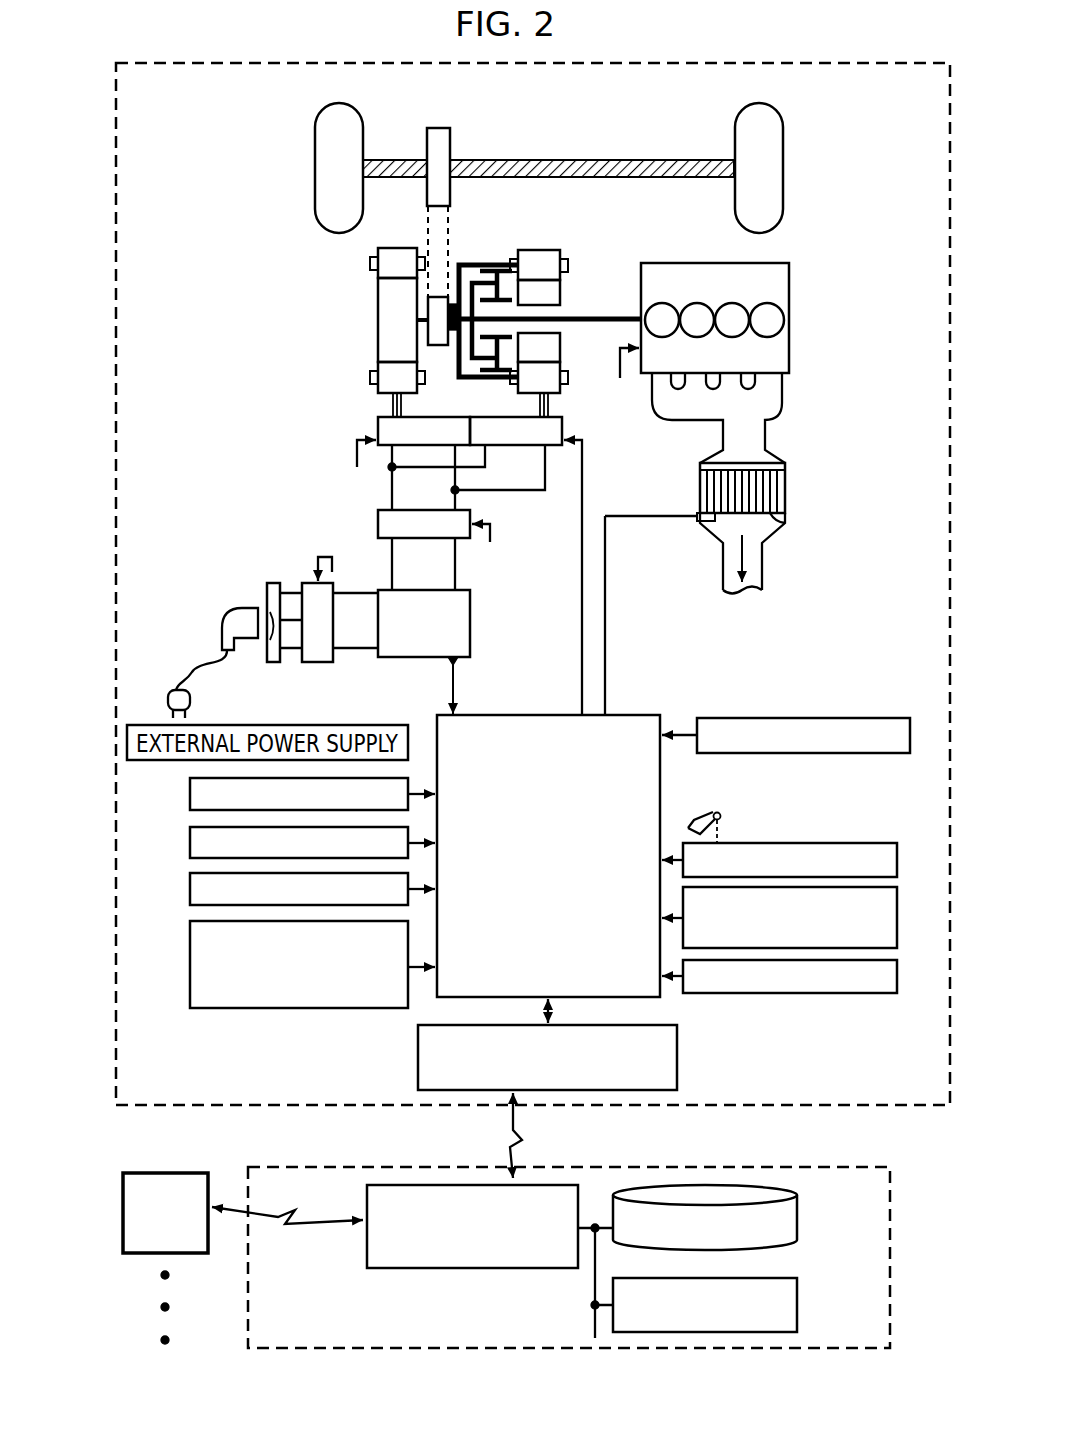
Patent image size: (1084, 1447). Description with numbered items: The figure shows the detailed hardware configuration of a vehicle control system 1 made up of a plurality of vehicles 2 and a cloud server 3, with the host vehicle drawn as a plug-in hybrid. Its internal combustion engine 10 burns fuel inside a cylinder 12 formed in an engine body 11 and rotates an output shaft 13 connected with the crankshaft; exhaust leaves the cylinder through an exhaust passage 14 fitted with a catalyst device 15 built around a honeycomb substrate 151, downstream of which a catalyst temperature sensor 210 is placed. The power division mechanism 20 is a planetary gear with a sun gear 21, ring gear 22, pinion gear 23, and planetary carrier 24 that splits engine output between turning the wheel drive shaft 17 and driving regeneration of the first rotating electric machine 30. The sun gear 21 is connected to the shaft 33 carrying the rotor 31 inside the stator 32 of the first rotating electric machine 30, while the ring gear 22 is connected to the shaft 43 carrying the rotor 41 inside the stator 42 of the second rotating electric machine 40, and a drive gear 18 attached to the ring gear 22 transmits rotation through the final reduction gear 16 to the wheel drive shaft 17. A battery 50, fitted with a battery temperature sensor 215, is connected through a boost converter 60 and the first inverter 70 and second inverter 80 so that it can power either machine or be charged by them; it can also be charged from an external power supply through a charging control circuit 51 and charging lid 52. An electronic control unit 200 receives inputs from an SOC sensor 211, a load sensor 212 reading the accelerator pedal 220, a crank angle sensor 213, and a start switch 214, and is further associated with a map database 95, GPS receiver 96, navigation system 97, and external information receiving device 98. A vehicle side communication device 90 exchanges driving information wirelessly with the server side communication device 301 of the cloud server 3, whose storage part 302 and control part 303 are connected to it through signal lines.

The vehicle control system 1 is at (106, 198).
The vehicles 2 is at (148, 1107).
The cloud server 3 is at (605, 1257).
The internal combustion engine 10 is at (740, 310).
The engine body 11 is at (780, 292).
The cylinder 12 is at (790, 326).
The output shaft 13 is at (620, 316).
The exhaust passage 14 is at (765, 432).
The catalyst device 15 is at (770, 517).
The substrate 151 is at (788, 525).
The final reduction gear 16 is at (440, 128).
The wheel drive shaft 17 is at (380, 158).
The drive gear 18 is at (438, 348).
The power division mechanism 20 is at (547, 275).
The sun gear 21 is at (544, 254).
The ring gear 22 is at (462, 262).
The pinion gear 23 is at (500, 296).
The planetary carrier 24 is at (482, 270).
The first rotating electric machine 30 is at (593, 296).
The rotor 31 is at (556, 288).
The stator 32 is at (556, 256).
The shaft 33 is at (552, 300).
The second rotating electric machine 40 is at (341, 320).
The rotor 41 is at (377, 331).
The stator 42 is at (368, 373).
The shaft 43 is at (377, 306).
The battery 50 is at (472, 638).
The charging control circuit 51 is at (322, 664).
The charging lid 52 is at (274, 664).
The boost converter 60 is at (377, 525).
The first inverter 70 is at (563, 427).
The second inverter 80 is at (377, 425).
The vehicle side communication device 90 is at (679, 1048).
The map database 95 is at (189, 794).
The GPS receiver 96 is at (189, 843).
The navigation system 97 is at (189, 889).
The external information receiving device 98 is at (189, 962).
The electronic control unit 200 is at (630, 714).
The catalyst temperature sensor 210 is at (712, 524).
The SOC sensor 211 is at (815, 717).
The load sensor 212 is at (812, 843).
The crank angle sensor 213 is at (897, 918).
The start switch 214 is at (850, 994).
The battery temperature sensor 215 is at (460, 662).
The accelerator pedal 220 is at (716, 814).
The server side communication device 301 is at (400, 1270).
The storage part 302 is at (799, 1225).
The control part 303 is at (799, 1310).